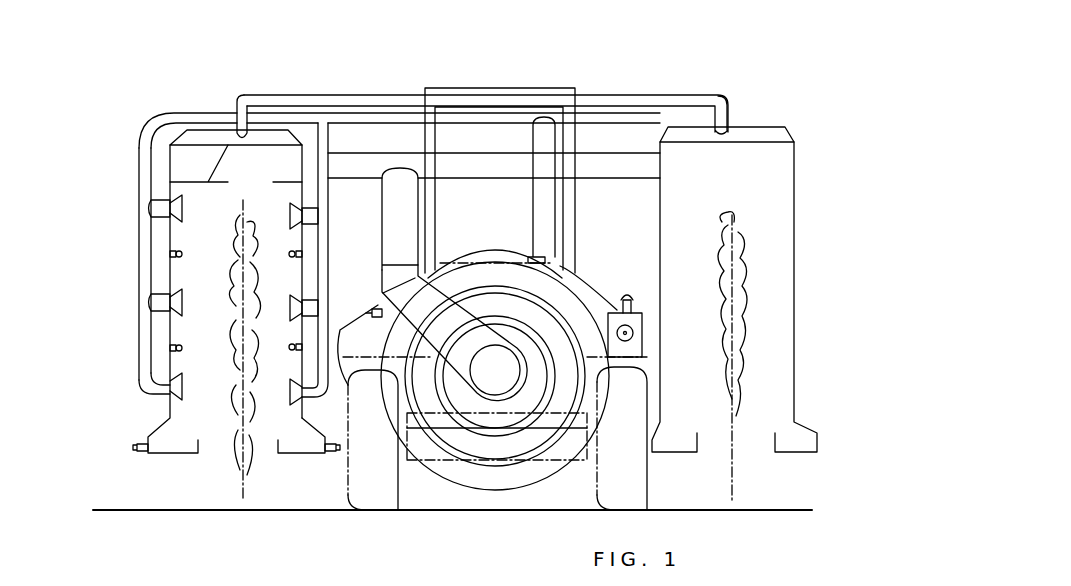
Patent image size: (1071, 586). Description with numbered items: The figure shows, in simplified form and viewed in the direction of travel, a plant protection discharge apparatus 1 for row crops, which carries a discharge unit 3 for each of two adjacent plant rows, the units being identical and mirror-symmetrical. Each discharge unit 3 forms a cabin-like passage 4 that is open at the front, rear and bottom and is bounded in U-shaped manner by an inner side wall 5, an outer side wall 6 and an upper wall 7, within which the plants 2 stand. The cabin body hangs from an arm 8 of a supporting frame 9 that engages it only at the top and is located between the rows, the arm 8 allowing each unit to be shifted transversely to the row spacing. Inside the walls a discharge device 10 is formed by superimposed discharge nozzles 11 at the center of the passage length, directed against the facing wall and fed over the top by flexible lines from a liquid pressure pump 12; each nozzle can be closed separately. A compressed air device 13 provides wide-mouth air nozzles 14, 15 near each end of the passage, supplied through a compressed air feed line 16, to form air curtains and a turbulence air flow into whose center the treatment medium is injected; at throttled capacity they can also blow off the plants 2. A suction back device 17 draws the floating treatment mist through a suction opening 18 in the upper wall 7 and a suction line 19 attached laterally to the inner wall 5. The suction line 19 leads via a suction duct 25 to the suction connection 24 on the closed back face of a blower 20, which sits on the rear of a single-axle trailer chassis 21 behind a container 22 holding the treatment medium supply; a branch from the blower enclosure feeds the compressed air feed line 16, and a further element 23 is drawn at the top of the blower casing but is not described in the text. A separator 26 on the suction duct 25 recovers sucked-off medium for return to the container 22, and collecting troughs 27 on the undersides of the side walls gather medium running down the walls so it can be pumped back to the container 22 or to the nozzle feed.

The discharge apparatus 1 is at (736, 96).
The plants 2 is at (755, 235).
The discharge unit 3 is at (374, 253).
The passage 4 is at (217, 430).
The inner side wall 5 is at (328, 290).
The side wall 6 is at (146, 272).
The upper wall 7 is at (196, 186).
The arm 8 is at (385, 94).
The supporting frame 9 is at (500, 92).
The discharge device 10 is at (192, 238).
The discharge nozzles 11 is at (180, 345).
The liquid pressure pump 12 is at (640, 306).
The compressed air device 13 is at (142, 400).
The air nozzle 14 is at (182, 396).
The air nozzle 15 is at (180, 292).
The compressed air feed line 16 is at (182, 113).
The suction back device 17 is at (297, 136).
The suction opening 18 is at (264, 184).
The suction line 19 is at (370, 166).
The blower 20 is at (410, 470).
The chassis 21 is at (592, 470).
The container 22 is at (612, 284).
The hood 23 is at (487, 262).
The suction connection 24 is at (519, 352).
The suction duct 25 is at (396, 383).
The separator 26 is at (400, 262).
The collecting troughs 27 is at (295, 454).